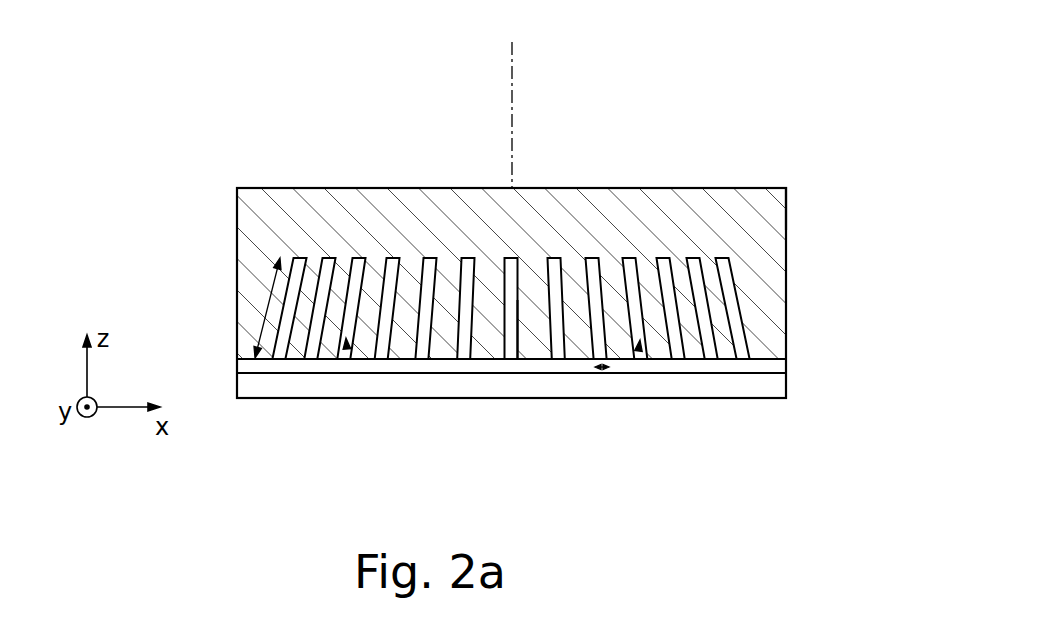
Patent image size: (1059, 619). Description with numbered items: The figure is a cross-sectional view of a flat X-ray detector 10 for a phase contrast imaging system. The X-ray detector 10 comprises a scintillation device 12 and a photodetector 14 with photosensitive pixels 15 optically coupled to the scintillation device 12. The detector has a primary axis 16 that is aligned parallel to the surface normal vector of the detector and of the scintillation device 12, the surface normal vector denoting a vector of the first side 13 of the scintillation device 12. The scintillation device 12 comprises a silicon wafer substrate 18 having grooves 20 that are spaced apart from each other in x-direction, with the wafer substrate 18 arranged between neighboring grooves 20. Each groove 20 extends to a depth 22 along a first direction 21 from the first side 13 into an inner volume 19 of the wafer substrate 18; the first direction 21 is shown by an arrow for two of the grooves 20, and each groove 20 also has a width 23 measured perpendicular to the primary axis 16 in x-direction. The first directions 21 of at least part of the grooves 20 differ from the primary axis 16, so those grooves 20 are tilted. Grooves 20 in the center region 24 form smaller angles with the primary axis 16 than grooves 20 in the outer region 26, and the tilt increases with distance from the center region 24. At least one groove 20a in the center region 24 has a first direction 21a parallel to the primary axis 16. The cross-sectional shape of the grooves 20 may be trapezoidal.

The X-ray detector 10 is at (660, 150).
The scintillation device 12 is at (787, 227).
The first side 13 is at (262, 360).
The photodetector 14 is at (789, 383).
The photosensitive pixels 15 is at (331, 373).
The primary axis 16 is at (513, 57).
The silicon wafer substrate 18 is at (254, 213).
The inner volume 19 is at (292, 237).
The grooves 20 is at (738, 282).
The groove 20a is at (535, 352).
The first direction 21 is at (347, 347).
The first direction 21a is at (520, 349).
The depth 22 is at (265, 302).
The width 23 is at (602, 369).
The center region 24 is at (468, 188).
The outer region 26 is at (752, 187).